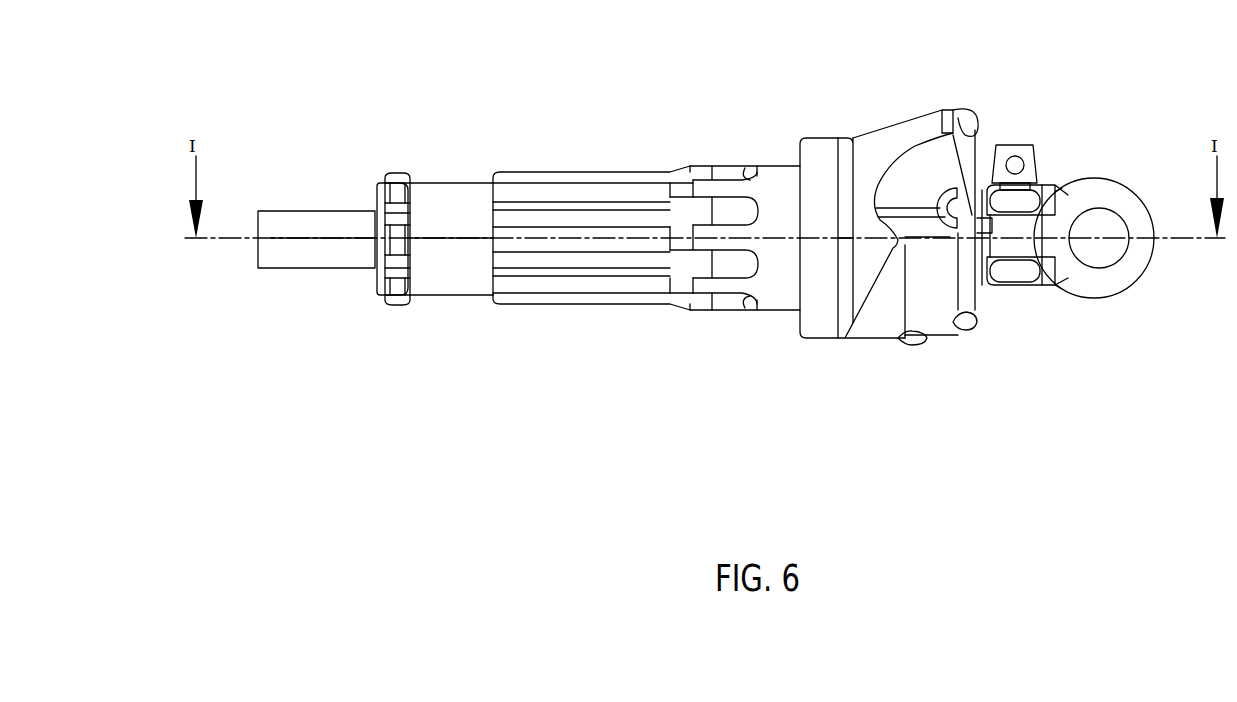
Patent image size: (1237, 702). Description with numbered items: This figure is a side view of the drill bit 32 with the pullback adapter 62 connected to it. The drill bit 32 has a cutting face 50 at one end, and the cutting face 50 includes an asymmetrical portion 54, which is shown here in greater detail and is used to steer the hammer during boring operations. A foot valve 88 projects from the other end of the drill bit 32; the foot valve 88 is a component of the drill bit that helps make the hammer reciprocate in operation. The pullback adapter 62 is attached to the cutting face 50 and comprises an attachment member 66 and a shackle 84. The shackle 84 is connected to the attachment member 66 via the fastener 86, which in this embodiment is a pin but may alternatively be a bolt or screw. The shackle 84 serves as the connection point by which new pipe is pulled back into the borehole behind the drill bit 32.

The drill bit 32 is at (607, 93).
The cutting face 50 is at (977, 305).
The asymmetrical portion 54 is at (945, 337).
The pullback adapter 62 is at (1140, 105).
The attachment member 66 is at (1033, 243).
The shackle 84 is at (1133, 263).
The fastener 86 is at (1022, 155).
The foot valve 88 is at (287, 218).